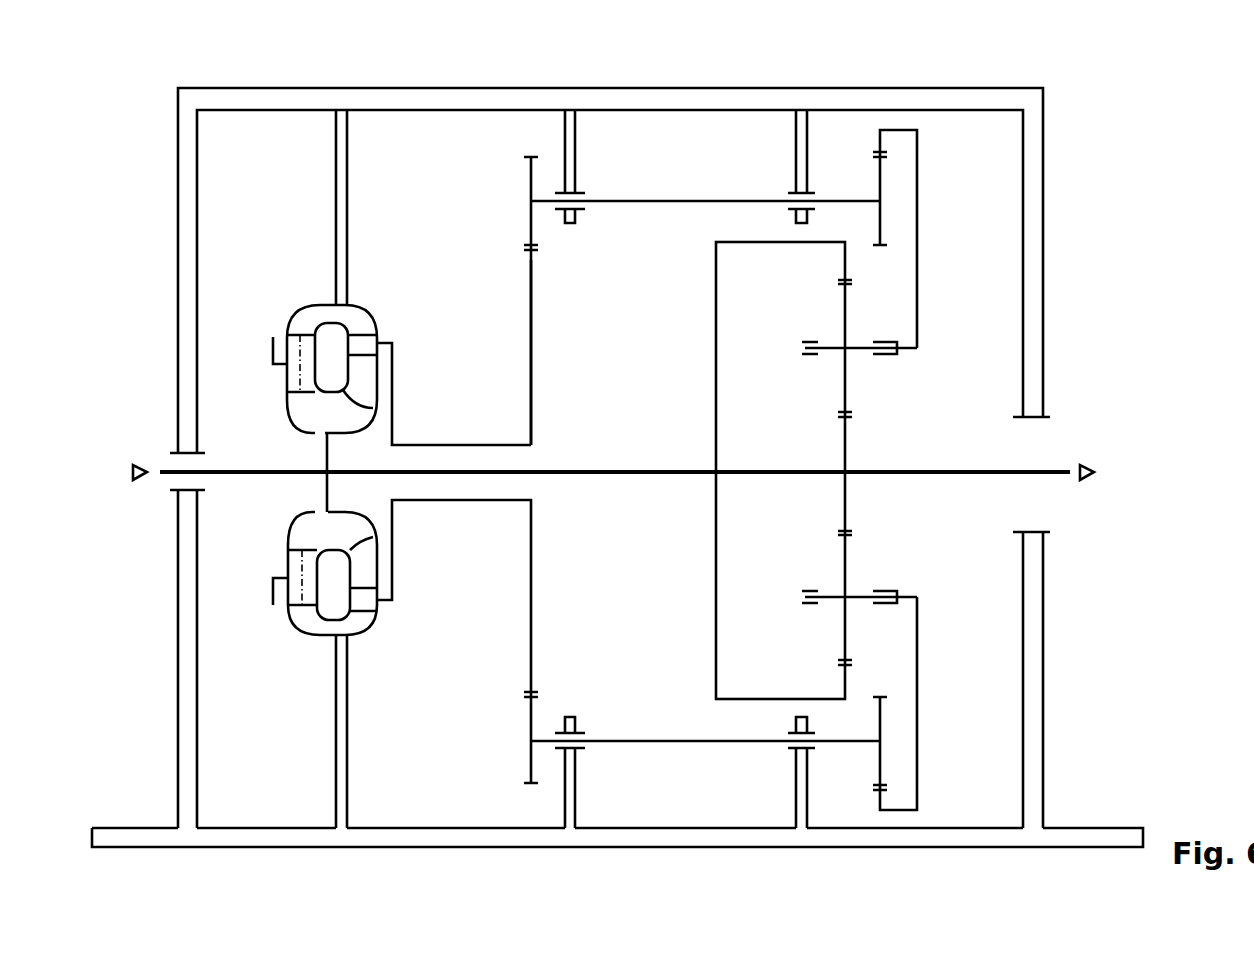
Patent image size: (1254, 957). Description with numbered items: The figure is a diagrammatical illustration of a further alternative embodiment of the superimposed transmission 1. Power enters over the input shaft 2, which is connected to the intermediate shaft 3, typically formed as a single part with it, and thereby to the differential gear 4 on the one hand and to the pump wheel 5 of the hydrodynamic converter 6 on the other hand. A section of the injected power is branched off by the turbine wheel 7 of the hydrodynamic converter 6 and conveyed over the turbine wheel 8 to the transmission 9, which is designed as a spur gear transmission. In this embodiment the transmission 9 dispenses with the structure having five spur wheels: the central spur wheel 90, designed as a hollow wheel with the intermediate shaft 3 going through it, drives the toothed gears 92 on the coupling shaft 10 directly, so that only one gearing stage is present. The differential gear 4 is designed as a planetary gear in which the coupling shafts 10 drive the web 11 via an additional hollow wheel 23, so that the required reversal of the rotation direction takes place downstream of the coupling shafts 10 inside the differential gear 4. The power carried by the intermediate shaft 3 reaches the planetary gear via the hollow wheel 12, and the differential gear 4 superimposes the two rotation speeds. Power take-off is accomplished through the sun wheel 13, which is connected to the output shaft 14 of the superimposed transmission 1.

The superimposed transmission 1 is at (1122, 138).
The input shaft 2 is at (162, 465).
The intermediate shaft 3 is at (666, 465).
The differential gear 4 is at (945, 404).
The pump wheel 5 is at (372, 380).
The hydrodynamic converter 6 is at (296, 296).
The turbine wheel 7 is at (358, 335).
The turbine wheel 8 is at (440, 505).
The transmission 9 is at (500, 283).
The coupling shafts 10 is at (700, 196).
The web 11 is at (843, 316).
The hollow wheel 12 is at (843, 263).
The sun wheel 13 is at (848, 500).
The output shaft 14 is at (1065, 468).
The additional hollow wheel 23 is at (920, 228).
The central spur wheel 90 is at (537, 376).
The toothed gears 92 is at (527, 182).